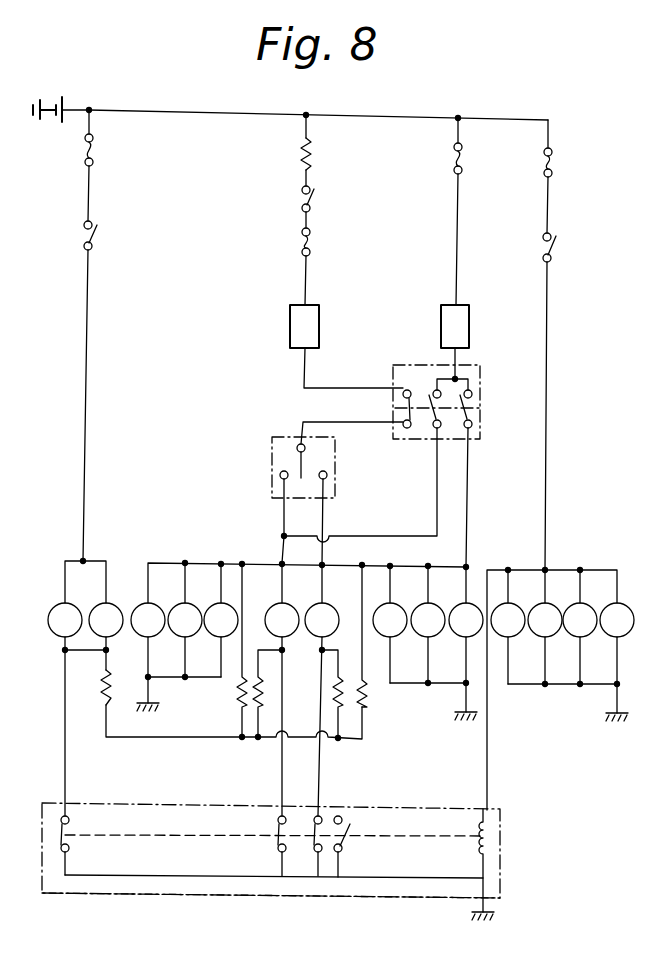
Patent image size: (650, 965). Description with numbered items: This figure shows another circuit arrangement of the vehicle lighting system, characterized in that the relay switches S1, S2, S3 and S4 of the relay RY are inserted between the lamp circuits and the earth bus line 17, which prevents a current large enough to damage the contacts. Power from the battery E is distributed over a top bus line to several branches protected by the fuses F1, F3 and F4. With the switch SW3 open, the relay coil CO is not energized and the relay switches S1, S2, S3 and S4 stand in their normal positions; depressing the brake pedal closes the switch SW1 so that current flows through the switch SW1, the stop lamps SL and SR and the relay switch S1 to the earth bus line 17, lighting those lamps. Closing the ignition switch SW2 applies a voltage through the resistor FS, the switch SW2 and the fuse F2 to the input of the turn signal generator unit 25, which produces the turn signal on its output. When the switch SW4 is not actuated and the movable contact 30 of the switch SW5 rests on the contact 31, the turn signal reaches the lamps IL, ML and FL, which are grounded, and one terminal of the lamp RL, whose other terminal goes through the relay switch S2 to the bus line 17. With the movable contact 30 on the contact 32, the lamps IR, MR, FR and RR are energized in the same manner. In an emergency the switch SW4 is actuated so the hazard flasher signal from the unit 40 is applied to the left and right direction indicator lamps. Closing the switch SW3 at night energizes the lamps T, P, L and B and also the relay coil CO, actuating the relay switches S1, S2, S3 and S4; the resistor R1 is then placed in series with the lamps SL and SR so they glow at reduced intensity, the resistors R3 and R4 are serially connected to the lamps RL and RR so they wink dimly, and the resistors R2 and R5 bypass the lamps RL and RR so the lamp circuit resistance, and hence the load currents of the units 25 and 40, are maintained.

The battery E is at (62, 96).
The fuse F1 is at (94, 150).
The fuse F2 is at (310, 242).
The fuse F3 is at (462, 159).
The fuse F4 is at (552, 162).
The resistor FS is at (311, 154).
The switch SW1 is at (95, 236).
The ignition switch SW2 is at (312, 197).
The switch SW3 is at (554, 247).
The switch SW4 is at (481, 416).
The switch SW5 is at (316, 461).
The turn signal generator unit 25 is at (319, 322).
The unit 40 is at (469, 322).
The movable contact 30 is at (298, 446).
The contact 31 is at (280, 475).
The contact 32 is at (327, 476).
The stop lamp SL is at (65, 626).
The stop lamp SR is at (106, 626).
The lamp IL is at (148, 640).
The lamp ML is at (185, 620).
The lamp FL is at (221, 620).
The lamp RL is at (282, 690).
The lamp RR is at (322, 690).
The lamp FR is at (390, 624).
The lamp MR is at (428, 624).
The lamp IR is at (466, 639).
The lamp T is at (508, 627).
The lamp P is at (545, 627).
The lamp L is at (580, 627).
The lamp B is at (617, 658).
The resistor R1 is at (102, 685).
The resistor R2 is at (238, 690).
The resistor R3 is at (262, 692).
The resistor R4 is at (336, 686).
The resistor R5 is at (366, 693).
The relay switch S1 is at (69, 850).
The relay switch S2 is at (276, 842).
The relay switch S3 is at (314, 842).
The relay switch S4 is at (344, 846).
The relay coil CO is at (481, 847).
The relay RY is at (296, 857).
The earth bus line 17 is at (376, 884).